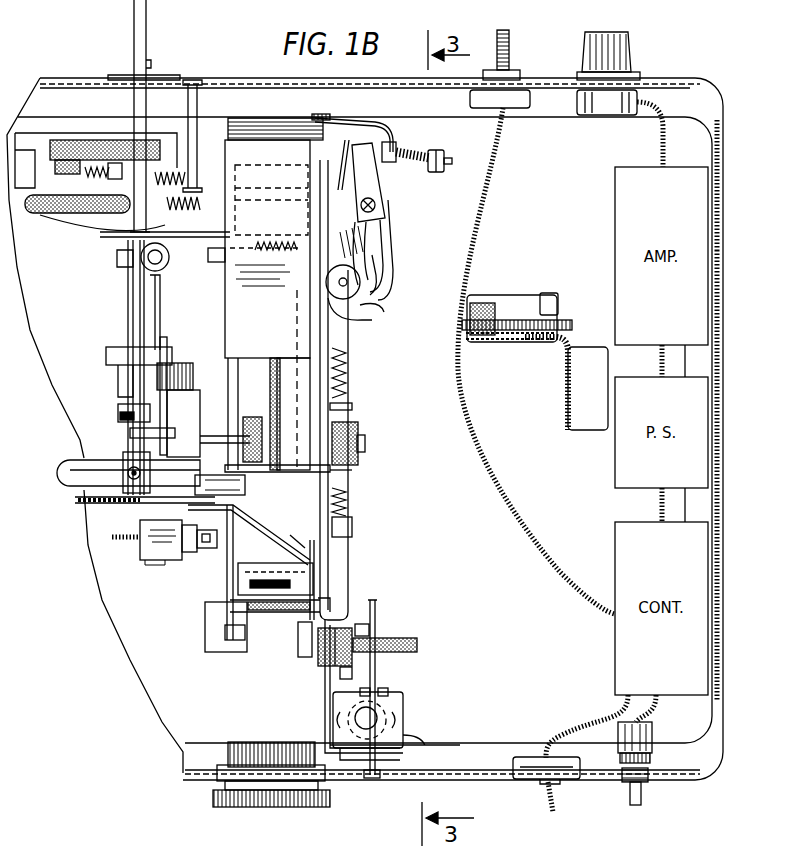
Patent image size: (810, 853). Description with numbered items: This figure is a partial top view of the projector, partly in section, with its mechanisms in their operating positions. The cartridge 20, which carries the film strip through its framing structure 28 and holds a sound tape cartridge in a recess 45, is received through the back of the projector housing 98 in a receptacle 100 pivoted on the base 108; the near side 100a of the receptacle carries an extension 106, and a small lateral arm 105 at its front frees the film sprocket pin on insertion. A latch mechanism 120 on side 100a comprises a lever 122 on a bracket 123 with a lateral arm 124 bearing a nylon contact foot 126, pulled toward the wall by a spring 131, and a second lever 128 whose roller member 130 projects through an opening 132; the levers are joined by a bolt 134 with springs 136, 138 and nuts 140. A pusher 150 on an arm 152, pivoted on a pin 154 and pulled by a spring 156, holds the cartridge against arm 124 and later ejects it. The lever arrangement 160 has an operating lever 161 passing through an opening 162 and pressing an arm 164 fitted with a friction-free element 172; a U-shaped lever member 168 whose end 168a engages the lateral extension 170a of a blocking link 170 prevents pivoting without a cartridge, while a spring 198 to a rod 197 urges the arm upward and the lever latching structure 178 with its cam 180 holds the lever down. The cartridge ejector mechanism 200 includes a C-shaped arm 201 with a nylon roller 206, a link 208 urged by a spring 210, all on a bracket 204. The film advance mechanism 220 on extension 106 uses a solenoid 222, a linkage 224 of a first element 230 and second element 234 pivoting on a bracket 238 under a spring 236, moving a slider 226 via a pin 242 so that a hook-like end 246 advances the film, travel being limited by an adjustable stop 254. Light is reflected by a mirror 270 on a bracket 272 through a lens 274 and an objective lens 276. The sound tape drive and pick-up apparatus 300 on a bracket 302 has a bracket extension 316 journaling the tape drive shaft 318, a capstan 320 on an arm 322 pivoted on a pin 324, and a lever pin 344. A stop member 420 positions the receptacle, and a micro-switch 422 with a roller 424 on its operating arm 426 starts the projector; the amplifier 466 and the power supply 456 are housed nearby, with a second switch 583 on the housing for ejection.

The cartridge 20 is at (326, 477).
The framing structure 28 is at (262, 640).
The recess 45 is at (280, 380).
The projector housing 98 is at (731, 391).
The receptacle 100 is at (240, 322).
The near side of receptacle 100a is at (333, 409).
The lateral arm 105 is at (238, 652).
The extension 106 is at (358, 679).
The base 108 is at (458, 488).
The latch mechanism 120 is at (402, 228).
The lever 122 is at (390, 186).
The bracket 123 is at (375, 211).
The arm 124 is at (355, 119).
The contact foot 126 is at (316, 116).
The second lever 128 is at (355, 253).
The roller member 130 is at (371, 310).
The spring 131 is at (380, 291).
The opening 132 is at (338, 318).
The bolt 134 is at (440, 170).
The spring 136 is at (393, 136).
The spring 138 is at (405, 162).
The nuts 140 is at (438, 173).
The pusher 150 is at (302, 658).
The arm 152 is at (348, 574).
The pin 154 is at (352, 526).
The spring 156 is at (348, 363).
The lever arrangement 160 is at (68, 229).
The operating lever 161 is at (141, 48).
The opening 162 is at (149, 63).
The arm 164 is at (93, 222).
The U-shaped lever member 168 is at (219, 259).
The end of lever member 168a is at (232, 288).
The blocking link 170 is at (205, 255).
The lateral extension 170a is at (212, 247).
The friction-free element 172 is at (32, 212).
The lever latching structure 178 is at (97, 133).
The cam 180 is at (95, 145).
The rod 197 is at (198, 104).
The spring 198 is at (156, 172).
The cartridge ejector mechanism 200 is at (540, 285).
The C-shaped arm 201 is at (516, 330).
The bracket 204 is at (566, 400).
The nylon roller 206 is at (494, 312).
The link 208 is at (489, 333).
The spring 210 is at (540, 320).
The film advance mechanism 220 is at (415, 702).
The solenoid 222 is at (405, 718).
The linkage 224 is at (361, 681).
The slider 226 is at (355, 657).
The first element 230 is at (382, 741).
The second element 234 is at (378, 607).
The spring 236 is at (371, 772).
The bracket 238 is at (352, 754).
The pin 242 is at (415, 645).
The hook-like end 246 is at (322, 603).
The adjustable stop 254 is at (356, 632).
The mirror 270 is at (285, 543).
The bracket 272 is at (297, 545).
The lens 274 is at (228, 583).
The objective lens 276 is at (213, 802).
The sound tape drive and pick-up apparatus 300 is at (90, 352).
The bracket 302 is at (80, 512).
The bracket extension 316 is at (140, 434).
The tape drive shaft 318 is at (246, 492).
The capstan 320 is at (248, 414).
The arm 322 is at (200, 383).
The pin 324 is at (130, 413).
The pin 344 is at (112, 367).
The stop member 420 is at (222, 494).
The micro-switch 422 is at (147, 553).
The roller 424 is at (205, 549).
The operating arm 426 is at (188, 557).
The A.C.-D.C. converter and D.C. power supply 456 is at (712, 466).
The amplifier 466 is at (723, 268).
The second switch 583 is at (648, 795).